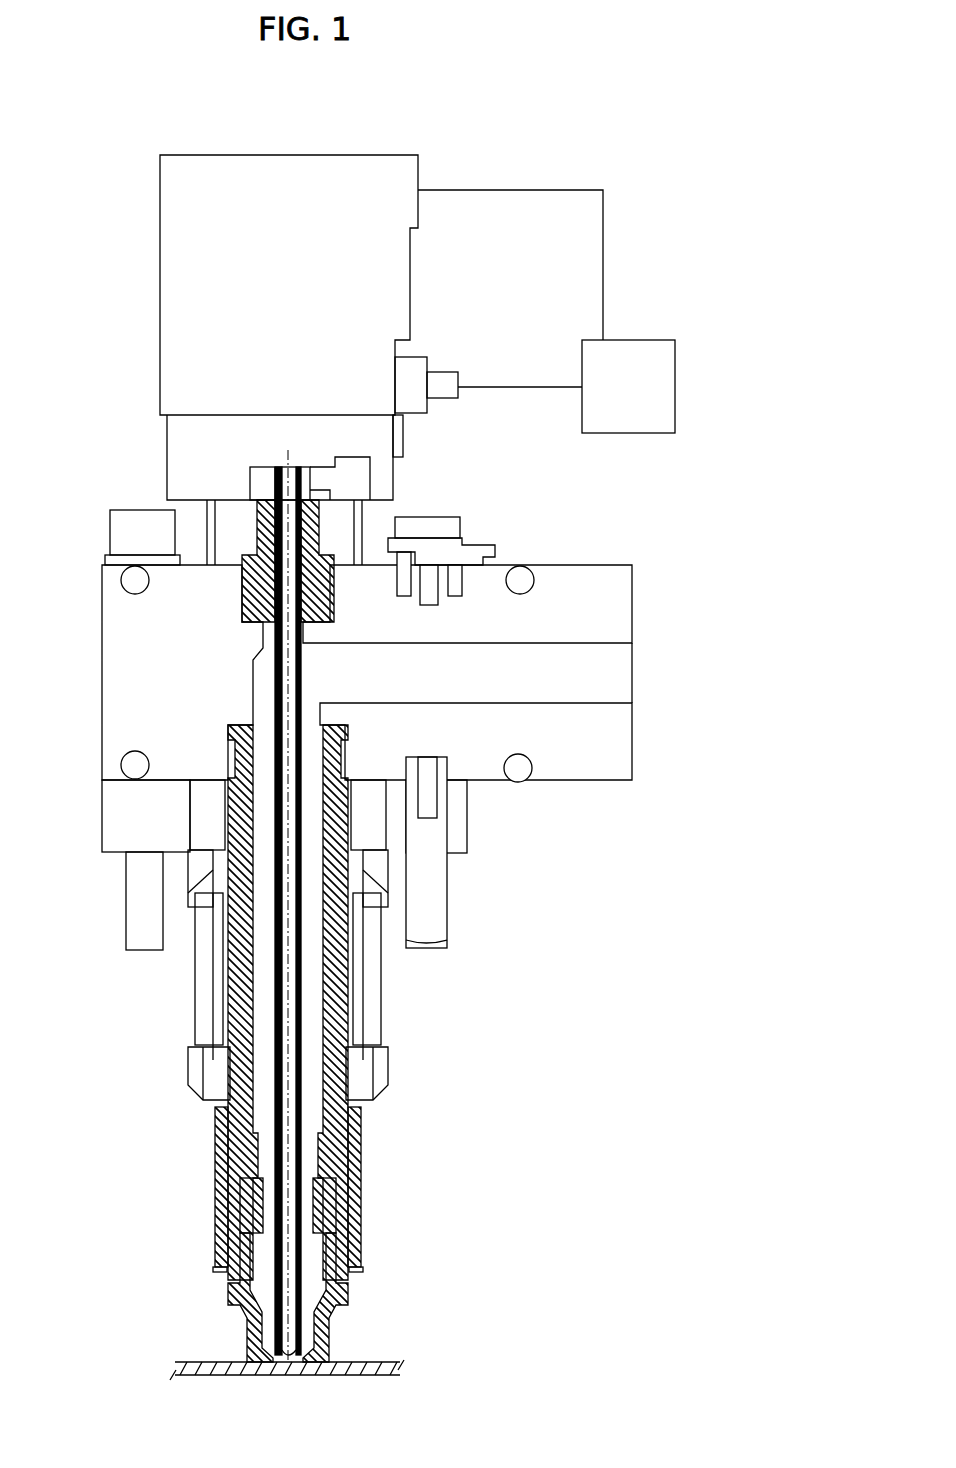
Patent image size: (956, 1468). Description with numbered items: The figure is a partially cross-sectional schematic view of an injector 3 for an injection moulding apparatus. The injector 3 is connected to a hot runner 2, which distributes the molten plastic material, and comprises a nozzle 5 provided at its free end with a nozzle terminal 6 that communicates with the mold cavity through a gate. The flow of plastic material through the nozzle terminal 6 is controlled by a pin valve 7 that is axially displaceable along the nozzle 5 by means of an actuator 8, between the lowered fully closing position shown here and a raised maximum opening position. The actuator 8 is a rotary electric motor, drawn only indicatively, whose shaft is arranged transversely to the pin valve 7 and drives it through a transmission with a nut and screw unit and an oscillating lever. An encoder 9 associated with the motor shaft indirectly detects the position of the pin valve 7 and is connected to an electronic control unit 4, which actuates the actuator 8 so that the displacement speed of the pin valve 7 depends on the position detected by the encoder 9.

The hot runner 2 is at (130, 635).
The injector 3 is at (478, 915).
The electronic control unit 4 is at (632, 362).
The nozzle 5 is at (357, 1168).
The nozzle terminal 6 is at (332, 1333).
The pin valve 7 is at (297, 966).
The actuator 8 is at (195, 256).
The encoder 9 is at (427, 405).